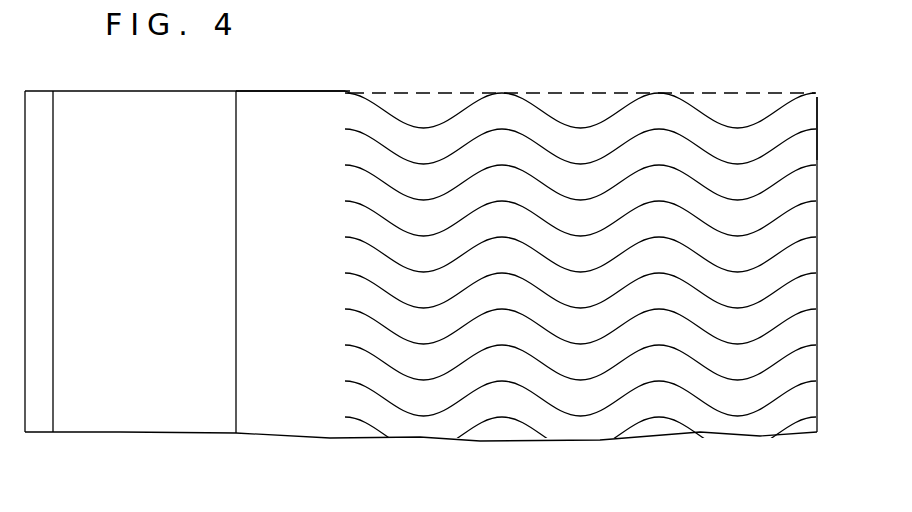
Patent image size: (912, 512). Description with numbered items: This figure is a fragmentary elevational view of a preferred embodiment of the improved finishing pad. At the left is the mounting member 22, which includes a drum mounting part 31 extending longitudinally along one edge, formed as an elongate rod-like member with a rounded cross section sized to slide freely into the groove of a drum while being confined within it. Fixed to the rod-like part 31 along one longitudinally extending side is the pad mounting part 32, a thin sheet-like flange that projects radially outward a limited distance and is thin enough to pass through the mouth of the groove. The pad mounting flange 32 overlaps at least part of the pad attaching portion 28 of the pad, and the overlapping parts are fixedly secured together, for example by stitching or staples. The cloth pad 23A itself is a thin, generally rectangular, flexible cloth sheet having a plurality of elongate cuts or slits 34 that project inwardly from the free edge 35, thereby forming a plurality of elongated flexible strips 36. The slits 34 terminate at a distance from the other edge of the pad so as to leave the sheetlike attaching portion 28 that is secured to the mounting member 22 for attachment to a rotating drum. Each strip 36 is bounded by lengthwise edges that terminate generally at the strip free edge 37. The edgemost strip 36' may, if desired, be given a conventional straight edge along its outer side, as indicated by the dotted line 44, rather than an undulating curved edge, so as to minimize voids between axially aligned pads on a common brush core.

The mounting member 22 is at (77, 80).
The drum mounting part 31 is at (40, 432).
The pad mounting part 32 is at (130, 412).
The pad attaching portion 28 is at (288, 103).
The cloth pad 23A is at (350, 86).
The dotted line 44 is at (405, 92).
The cuts or slits 34 is at (541, 147).
The flexible strips 36 is at (711, 266).
The edgemost strip 36' is at (619, 68).
The strip free edge 37 is at (810, 148).
The free edge 35 is at (818, 182).